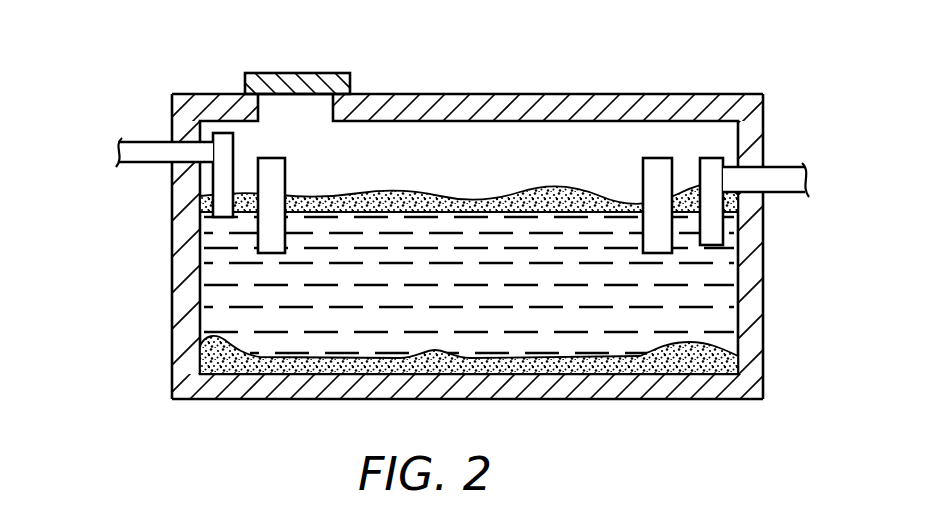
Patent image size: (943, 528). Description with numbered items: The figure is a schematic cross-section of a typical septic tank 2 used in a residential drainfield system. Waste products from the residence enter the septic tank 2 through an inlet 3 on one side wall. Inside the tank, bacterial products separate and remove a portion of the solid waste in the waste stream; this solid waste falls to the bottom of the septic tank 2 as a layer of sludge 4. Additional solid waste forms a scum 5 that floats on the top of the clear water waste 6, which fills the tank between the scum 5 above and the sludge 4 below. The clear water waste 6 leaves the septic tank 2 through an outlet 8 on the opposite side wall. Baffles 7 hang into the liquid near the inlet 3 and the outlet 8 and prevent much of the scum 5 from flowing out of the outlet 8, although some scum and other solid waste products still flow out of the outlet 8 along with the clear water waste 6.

The septic tank 2 is at (757, 71).
The inlet 3 is at (133, 142).
The sludge 4 is at (730, 358).
The scum 5 is at (383, 200).
The clear water waste 6 is at (231, 274).
The baffles 7 is at (272, 178).
The outlet 8 is at (780, 168).